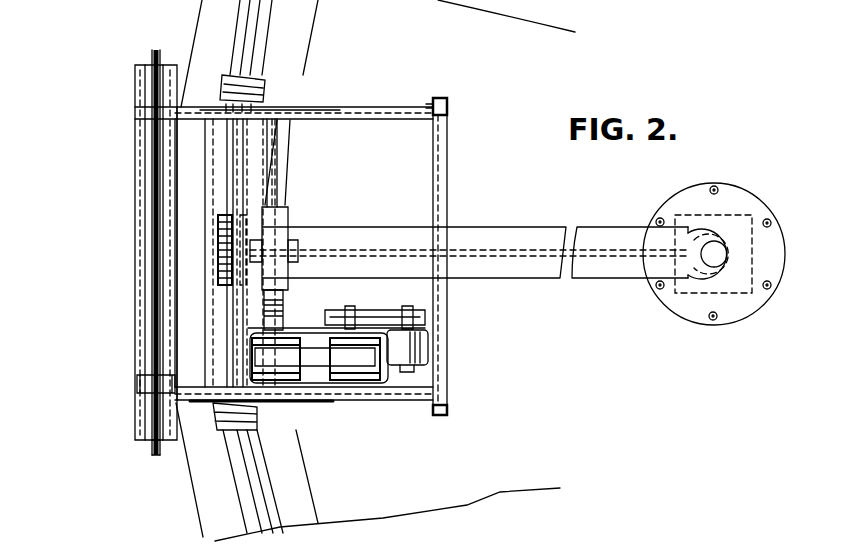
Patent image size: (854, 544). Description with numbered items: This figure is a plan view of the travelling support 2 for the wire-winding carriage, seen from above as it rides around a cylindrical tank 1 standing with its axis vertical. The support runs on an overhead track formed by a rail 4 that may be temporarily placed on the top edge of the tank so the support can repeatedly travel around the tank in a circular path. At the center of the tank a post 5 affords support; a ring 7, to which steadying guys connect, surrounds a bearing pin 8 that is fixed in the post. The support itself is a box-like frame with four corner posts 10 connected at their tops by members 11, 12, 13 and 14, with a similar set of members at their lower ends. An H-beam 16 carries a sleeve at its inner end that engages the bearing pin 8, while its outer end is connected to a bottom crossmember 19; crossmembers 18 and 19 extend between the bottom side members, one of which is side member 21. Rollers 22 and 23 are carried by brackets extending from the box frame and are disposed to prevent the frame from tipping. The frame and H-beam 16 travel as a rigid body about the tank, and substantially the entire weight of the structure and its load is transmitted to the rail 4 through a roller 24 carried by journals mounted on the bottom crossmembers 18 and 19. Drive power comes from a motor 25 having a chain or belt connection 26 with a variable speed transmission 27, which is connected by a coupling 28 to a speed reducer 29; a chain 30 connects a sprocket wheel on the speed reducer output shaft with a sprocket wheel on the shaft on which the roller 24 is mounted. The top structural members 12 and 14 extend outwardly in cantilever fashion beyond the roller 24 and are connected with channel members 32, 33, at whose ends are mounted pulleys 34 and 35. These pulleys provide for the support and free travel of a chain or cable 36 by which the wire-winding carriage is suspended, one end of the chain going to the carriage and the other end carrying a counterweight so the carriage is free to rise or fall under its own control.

The cylindrical tank 1 is at (300, 494).
The travelling support 2 is at (466, 145).
The rail 4 is at (250, 462).
The post 5 is at (690, 300).
The ring 7 is at (733, 310).
The bearing pin 8 is at (714, 254).
The corner posts 10 is at (431, 107).
The top frame member 11 is at (446, 200).
The top structural member 12 is at (370, 108).
The top frame member 13 is at (243, 190).
The top structural member 14 is at (372, 410).
The H-beam 16 is at (552, 231).
The bottom crossmember 18 is at (210, 312).
The bottom crossmember 19 is at (270, 158).
The bottom side member 21 is at (343, 110).
The roller 22 is at (262, 417).
The roller 23 is at (258, 88).
The roller 24 is at (224, 255).
The motor 25 is at (424, 350).
The chain or belt connection 26 is at (380, 318).
The variable speed transmission 27 is at (310, 345).
The coupling 28 is at (283, 318).
The speed reducer 29 is at (282, 210).
The chain 30 is at (216, 237).
The channel member 32 is at (135, 341).
The channel member 33 is at (173, 205).
The pulley 34 is at (153, 52).
The pulley 35 is at (155, 446).
The chain or cable 36 is at (152, 284).